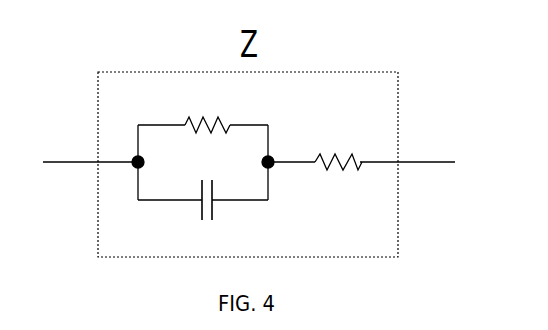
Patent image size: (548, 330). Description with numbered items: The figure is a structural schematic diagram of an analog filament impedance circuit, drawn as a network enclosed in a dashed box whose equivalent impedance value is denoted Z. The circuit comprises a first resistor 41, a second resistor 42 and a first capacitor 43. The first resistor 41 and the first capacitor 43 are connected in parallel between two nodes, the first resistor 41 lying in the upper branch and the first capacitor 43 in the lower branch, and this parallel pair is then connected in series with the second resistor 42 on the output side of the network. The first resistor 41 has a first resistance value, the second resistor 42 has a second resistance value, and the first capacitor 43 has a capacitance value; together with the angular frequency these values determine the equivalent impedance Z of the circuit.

The first resistor 41 is at (190, 117).
The second resistor 42 is at (362, 162).
The first capacitor 43 is at (215, 210).